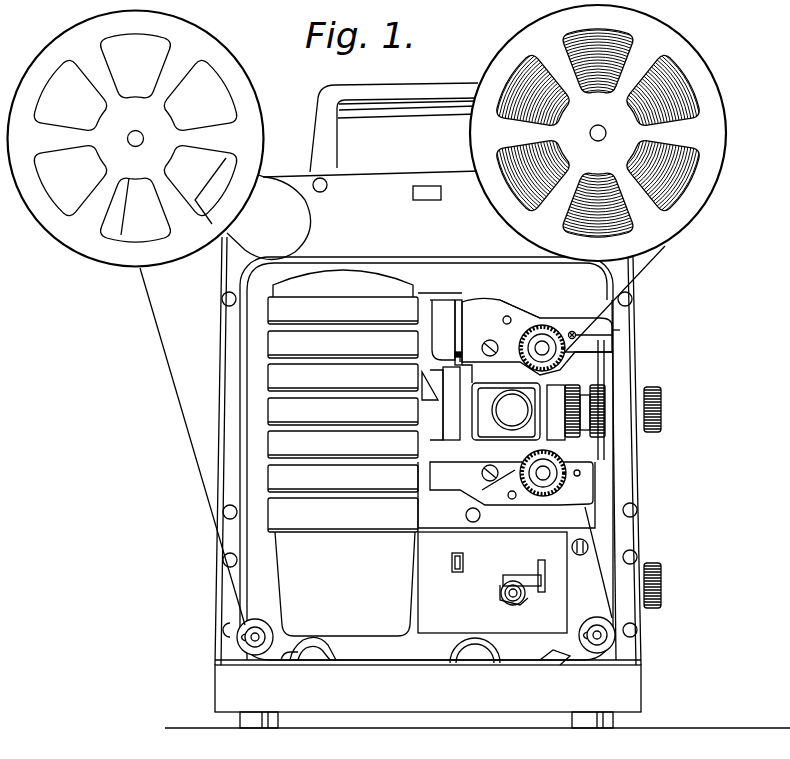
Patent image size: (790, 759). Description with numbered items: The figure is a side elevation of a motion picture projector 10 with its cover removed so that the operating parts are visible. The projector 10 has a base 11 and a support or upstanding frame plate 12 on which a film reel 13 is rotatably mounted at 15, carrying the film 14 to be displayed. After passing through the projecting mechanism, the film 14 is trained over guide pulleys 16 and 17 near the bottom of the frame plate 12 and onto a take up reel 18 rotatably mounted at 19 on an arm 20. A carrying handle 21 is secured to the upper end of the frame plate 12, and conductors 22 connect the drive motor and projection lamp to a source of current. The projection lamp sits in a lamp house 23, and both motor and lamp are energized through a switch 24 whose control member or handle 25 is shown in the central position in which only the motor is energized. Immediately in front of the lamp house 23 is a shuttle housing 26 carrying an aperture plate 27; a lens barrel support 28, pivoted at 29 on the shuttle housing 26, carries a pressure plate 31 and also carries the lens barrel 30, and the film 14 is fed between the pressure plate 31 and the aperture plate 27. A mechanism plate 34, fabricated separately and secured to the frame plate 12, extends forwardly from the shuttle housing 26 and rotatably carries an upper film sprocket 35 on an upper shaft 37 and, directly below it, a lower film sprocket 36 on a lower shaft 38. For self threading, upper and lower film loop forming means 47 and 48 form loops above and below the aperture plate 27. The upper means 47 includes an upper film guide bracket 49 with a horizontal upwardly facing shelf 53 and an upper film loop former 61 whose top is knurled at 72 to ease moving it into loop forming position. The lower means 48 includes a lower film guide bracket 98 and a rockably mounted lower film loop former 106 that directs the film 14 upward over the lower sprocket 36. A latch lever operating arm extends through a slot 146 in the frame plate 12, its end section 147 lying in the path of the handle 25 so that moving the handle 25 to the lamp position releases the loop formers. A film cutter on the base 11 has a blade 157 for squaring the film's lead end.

The motion picture projector 10 is at (122, 355).
The base 11 is at (648, 690).
The support or upstanding frame plate 12 is at (624, 308).
The film reel 13 is at (712, 104).
The film 14 is at (655, 257).
The rotatable mounting of film reel 15 is at (606, 129).
The guide pulley 16 is at (612, 640).
The guide pulley 17 is at (238, 642).
The take up reel 18 is at (228, 65).
The rotatable mounting of take up reel 19 is at (141, 133).
The arm 20 is at (258, 188).
The carrying handle 21 is at (428, 95).
The conductors 22 is at (333, 655).
The lamp house 23 is at (325, 300).
The switch 24 is at (537, 597).
The control member or handle 25 is at (508, 600).
The shuttle housing 26 is at (440, 310).
The aperture plate 27 is at (447, 312).
The lens barrel support 28 is at (480, 392).
The pivot 29 is at (455, 356).
The projection lens 30 is at (562, 390).
The pressure plate 31 is at (462, 370).
The mechanism plate 34 is at (548, 300).
The upper film sprocket 35 is at (562, 352).
The lower film sprocket 36 is at (560, 465).
The upper shaft 37 is at (545, 345).
The lower shaft 38 is at (548, 475).
The upper film loop forming means 47 is at (620, 339).
The lower film loop forming means 48 is at (605, 477).
The upper film guide bracket 49 is at (505, 360).
The horizontal upwardly facing shelf 53 is at (600, 336).
The upper film loop former 61 is at (530, 304).
The knurled surface 72 is at (460, 315).
The lower film guide bracket 98 is at (497, 462).
The lower film loop former 106 is at (530, 512).
The slot 146 is at (540, 566).
The end section 147 is at (508, 575).
The blade 157 is at (553, 660).